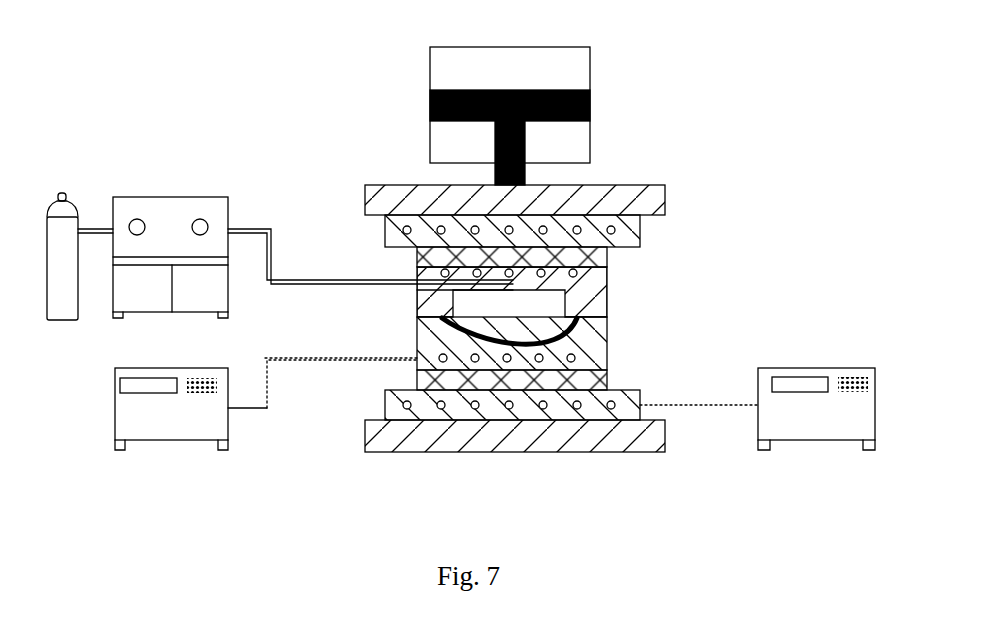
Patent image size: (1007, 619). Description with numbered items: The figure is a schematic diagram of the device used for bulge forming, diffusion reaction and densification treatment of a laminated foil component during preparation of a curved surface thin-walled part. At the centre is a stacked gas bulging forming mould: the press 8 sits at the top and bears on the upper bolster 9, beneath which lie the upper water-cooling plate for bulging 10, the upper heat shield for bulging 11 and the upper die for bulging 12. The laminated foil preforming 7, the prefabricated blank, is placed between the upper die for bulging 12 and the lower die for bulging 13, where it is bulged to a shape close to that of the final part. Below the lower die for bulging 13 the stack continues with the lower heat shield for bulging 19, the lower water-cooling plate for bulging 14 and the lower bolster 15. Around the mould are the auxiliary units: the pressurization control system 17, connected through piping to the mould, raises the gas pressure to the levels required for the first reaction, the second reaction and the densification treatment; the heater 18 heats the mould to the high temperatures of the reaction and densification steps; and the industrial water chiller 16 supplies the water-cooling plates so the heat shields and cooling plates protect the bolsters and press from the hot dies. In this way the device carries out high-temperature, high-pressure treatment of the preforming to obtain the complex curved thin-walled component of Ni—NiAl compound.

The laminated foil preforming 7 is at (577, 326).
The press 8 is at (590, 101).
The upper bolster 9 is at (645, 200).
The upper water-cooling plate for bulging 10 is at (640, 226).
The upper heat shield for bulging 11 is at (607, 251).
The upper die for bulging 12 is at (590, 298).
The lower die for bulging 13 is at (592, 353).
The lower water-cooling plate for bulging 14 is at (590, 406).
The lower bolster 15 is at (610, 442).
The industrial water chiller 16 is at (818, 412).
The pressurization control system 17 is at (172, 228).
The heater 18 is at (167, 417).
The lower heat shield for bulging 19 is at (590, 381).